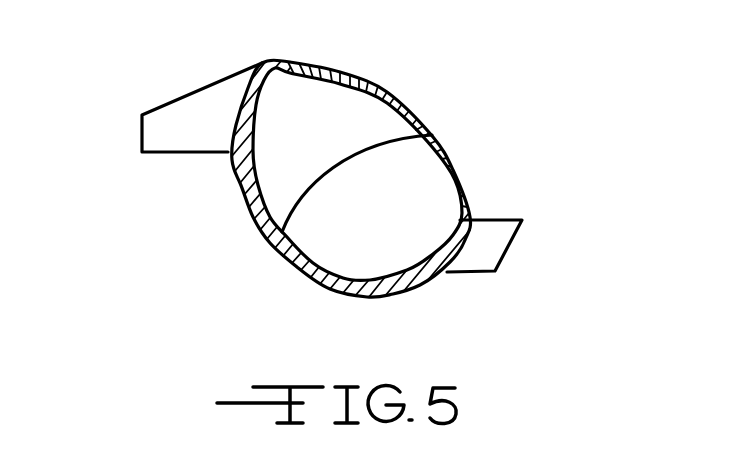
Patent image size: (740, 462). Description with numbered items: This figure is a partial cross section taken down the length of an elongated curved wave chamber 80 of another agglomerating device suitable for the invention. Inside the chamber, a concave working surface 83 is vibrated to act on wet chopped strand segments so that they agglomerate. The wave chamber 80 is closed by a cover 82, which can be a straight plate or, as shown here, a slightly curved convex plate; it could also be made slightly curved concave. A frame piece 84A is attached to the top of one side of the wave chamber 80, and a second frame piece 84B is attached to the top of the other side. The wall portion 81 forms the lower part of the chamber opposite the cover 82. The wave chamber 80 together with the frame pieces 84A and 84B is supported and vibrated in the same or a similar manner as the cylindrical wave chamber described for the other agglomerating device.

The wave chamber 80 is at (259, 238).
The lower wall portion 81 is at (398, 283).
The cover 82 is at (387, 93).
The concave working surface 83 is at (428, 137).
The frame piece 84A is at (162, 134).
The second frame piece 84B is at (487, 251).